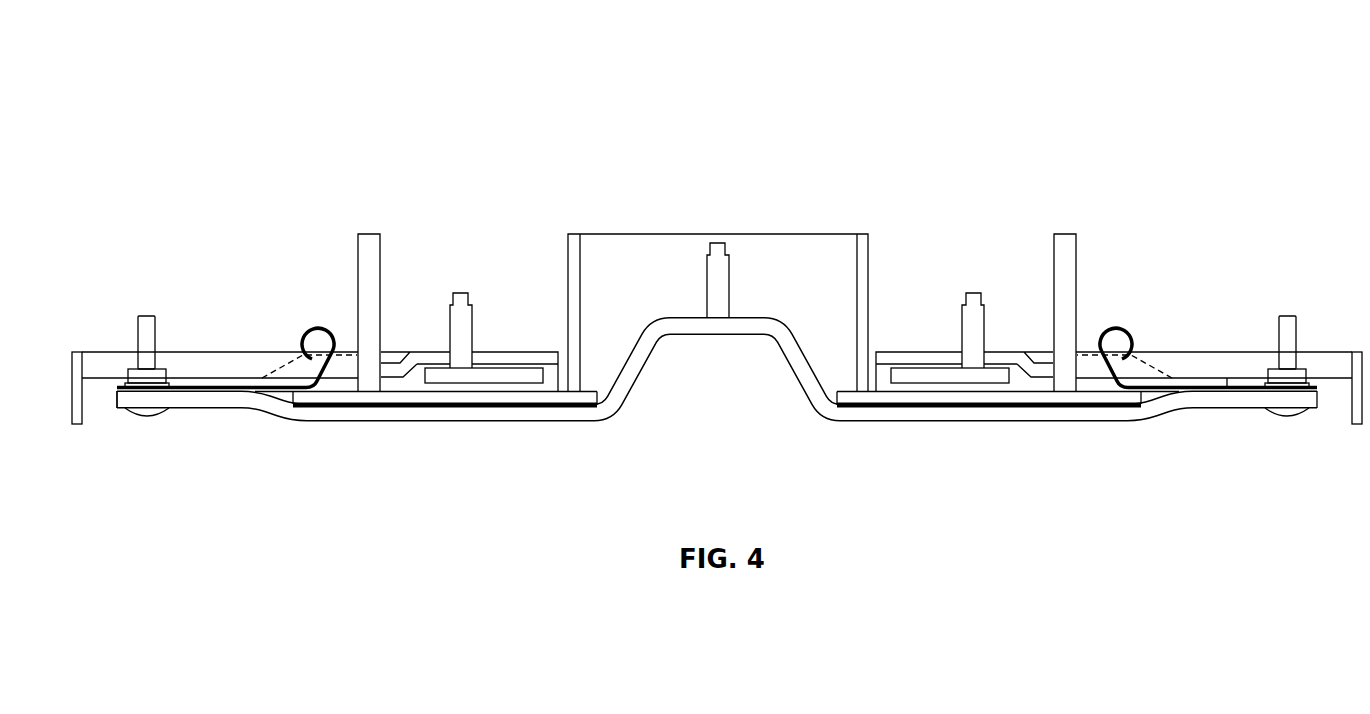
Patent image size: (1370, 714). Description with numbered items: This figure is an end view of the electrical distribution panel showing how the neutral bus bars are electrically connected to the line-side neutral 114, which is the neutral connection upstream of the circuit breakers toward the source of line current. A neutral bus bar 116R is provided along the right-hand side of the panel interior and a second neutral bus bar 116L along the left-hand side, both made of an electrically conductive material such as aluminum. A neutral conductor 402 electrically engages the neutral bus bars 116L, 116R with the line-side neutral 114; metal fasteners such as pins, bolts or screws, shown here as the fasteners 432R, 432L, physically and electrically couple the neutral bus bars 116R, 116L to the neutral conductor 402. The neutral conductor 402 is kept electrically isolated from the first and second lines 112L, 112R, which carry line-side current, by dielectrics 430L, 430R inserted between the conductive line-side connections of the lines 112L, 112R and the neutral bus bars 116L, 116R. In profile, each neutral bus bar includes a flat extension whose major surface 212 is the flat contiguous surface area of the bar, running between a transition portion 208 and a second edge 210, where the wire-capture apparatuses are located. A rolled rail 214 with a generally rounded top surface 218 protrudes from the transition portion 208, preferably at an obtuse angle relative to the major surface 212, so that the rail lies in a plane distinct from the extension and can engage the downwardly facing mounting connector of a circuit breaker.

The neutral conductor 402 is at (612, 425).
The neutral bus bar 116R is at (178, 153).
The second neutral bus bar 116L is at (1256, 153).
The dielectric 430R is at (372, 248).
The dielectric 430L is at (1070, 248).
The second line 112R is at (472, 330).
The first line 112L is at (964, 330).
The right bolt 432R is at (138, 340).
The left bolt 432L is at (1298, 340).
The transition portion 208 is at (297, 385).
The generally rounded top surface 218 is at (322, 323).
The rolled rail 214 is at (283, 300).
The major surface 212 is at (207, 388).
The second edge 210 is at (117, 391).
The line-side neutral 114 is at (730, 267).